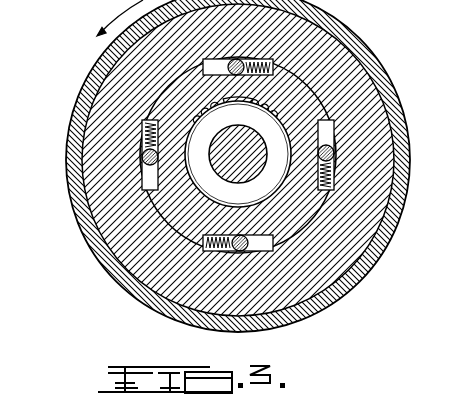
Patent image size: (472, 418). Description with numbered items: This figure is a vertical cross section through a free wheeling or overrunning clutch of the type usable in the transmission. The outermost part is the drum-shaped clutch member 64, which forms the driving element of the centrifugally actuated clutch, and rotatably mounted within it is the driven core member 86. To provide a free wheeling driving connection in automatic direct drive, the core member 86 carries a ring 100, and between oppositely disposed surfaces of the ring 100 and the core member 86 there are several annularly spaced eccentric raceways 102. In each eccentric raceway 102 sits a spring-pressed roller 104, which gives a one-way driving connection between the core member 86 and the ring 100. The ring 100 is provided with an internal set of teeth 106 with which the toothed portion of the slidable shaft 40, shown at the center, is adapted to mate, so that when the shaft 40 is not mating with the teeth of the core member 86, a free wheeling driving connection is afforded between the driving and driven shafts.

The slidable shaft 40 is at (252, 136).
The drum-shaped clutch member 64 is at (380, 255).
The core member 86 is at (373, 195).
The ring 100 is at (247, 164).
The eccentric raceway 102 is at (162, 181).
The spring-pressed roller 104 is at (337, 157).
The internal set of teeth 106 is at (270, 184).